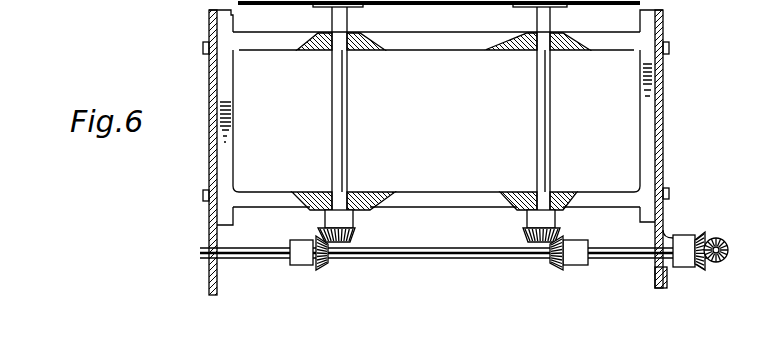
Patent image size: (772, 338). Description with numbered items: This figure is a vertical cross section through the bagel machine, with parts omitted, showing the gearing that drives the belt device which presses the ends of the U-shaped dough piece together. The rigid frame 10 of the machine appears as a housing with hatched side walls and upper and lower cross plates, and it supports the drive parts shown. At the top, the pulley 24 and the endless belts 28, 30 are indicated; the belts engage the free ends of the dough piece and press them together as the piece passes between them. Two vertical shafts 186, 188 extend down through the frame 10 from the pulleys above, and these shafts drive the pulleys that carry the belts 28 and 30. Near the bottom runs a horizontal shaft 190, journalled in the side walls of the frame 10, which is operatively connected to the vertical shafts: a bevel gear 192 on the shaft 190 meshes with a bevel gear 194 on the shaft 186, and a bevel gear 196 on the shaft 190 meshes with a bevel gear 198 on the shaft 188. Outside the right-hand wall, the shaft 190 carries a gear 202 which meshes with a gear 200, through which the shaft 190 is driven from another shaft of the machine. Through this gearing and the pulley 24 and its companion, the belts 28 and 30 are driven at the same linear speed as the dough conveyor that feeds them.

The frame 10 is at (668, 116).
The pulley 24 is at (272, 0).
The endless belt 28 is at (431, 0).
The endless belt 30 is at (443, 0).
The vertical shaft 186 is at (347, 143).
The vertical shaft 188 is at (550, 130).
The shaft 190 is at (430, 258).
The gear 192 is at (325, 265).
The gear 194 is at (357, 232).
The gear 196 is at (555, 268).
The gear 198 is at (525, 233).
The gear 200 is at (719, 238).
The gear 202 is at (700, 232).